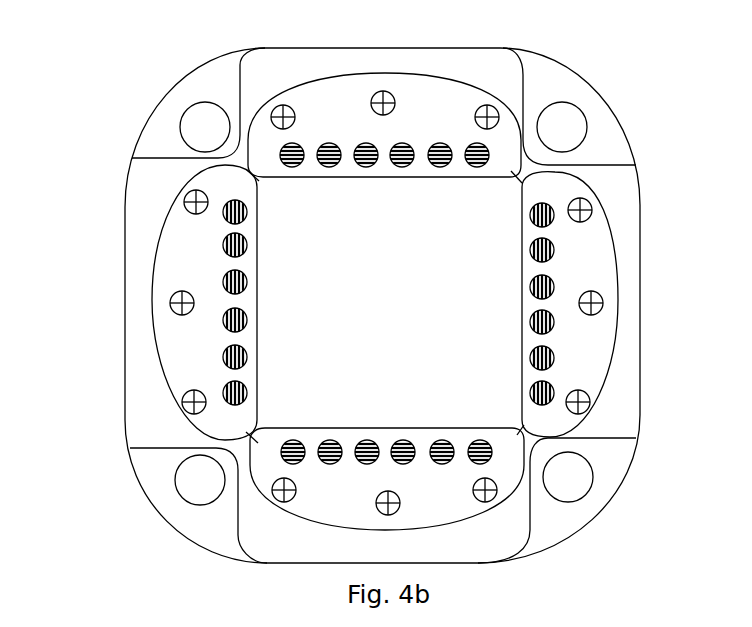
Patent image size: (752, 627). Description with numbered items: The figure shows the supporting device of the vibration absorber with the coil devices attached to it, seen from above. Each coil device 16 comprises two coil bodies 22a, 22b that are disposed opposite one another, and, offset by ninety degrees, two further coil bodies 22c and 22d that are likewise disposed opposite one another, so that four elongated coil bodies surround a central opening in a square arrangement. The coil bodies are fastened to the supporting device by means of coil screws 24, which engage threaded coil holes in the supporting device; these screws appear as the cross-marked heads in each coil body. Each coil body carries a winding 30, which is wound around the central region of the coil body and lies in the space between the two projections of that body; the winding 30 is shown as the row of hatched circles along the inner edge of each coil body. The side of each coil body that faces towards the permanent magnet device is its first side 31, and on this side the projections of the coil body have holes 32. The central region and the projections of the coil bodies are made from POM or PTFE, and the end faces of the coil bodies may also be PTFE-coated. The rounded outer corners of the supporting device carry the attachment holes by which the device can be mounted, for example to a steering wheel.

The coil device 16 is at (456, 62).
The coil body 22a is at (153, 303).
The coil body 22b is at (598, 200).
The coil body 22c is at (455, 525).
The coil body 22d is at (318, 82).
The coil screw 24 is at (383, 91).
The winding 30 is at (330, 465).
The first side 31 is at (247, 319).
The hole 32 is at (553, 287).